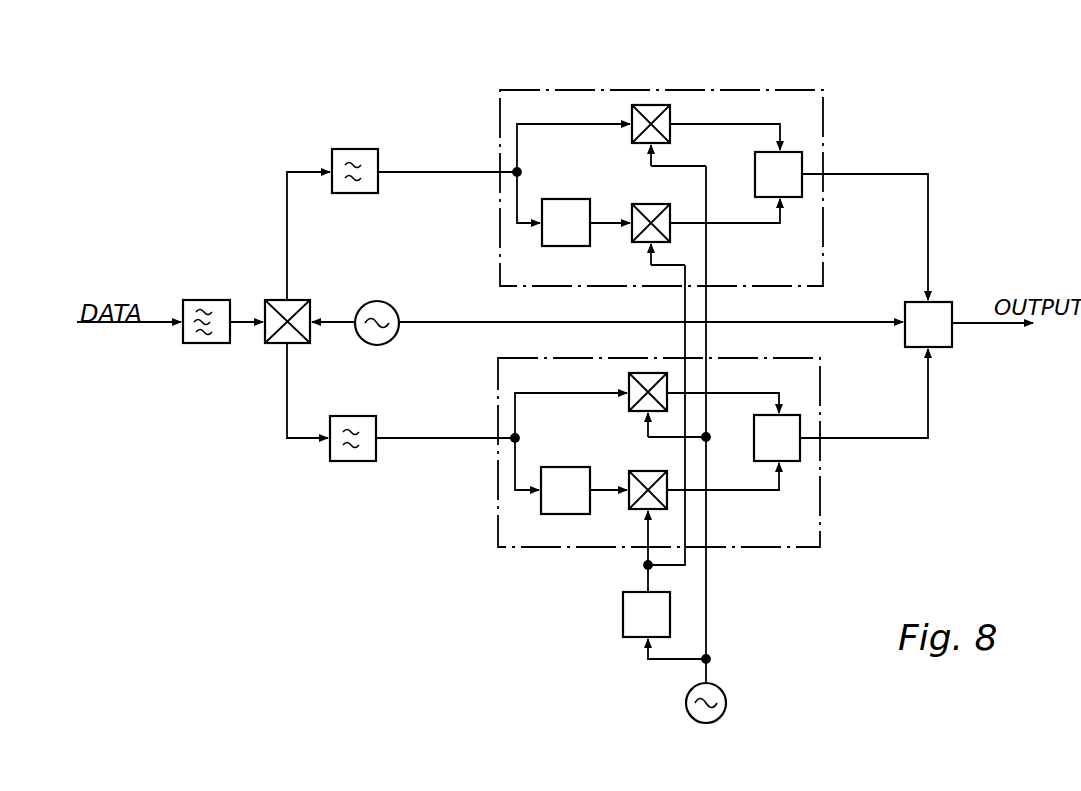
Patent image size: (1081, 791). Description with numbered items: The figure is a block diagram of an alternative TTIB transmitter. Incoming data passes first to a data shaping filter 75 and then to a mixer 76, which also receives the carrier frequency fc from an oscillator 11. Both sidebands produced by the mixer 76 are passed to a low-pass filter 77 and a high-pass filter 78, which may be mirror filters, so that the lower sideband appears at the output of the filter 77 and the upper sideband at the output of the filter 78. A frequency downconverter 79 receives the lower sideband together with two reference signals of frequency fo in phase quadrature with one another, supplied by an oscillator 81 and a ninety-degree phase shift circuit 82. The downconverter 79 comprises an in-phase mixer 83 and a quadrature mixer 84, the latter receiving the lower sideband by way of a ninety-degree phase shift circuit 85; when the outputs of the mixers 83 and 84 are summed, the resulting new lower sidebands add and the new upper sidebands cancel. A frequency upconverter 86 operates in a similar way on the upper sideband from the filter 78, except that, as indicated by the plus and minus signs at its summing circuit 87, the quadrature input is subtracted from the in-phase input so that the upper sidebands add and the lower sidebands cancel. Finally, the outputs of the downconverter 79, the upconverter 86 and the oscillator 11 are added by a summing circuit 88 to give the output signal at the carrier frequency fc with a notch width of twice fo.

The oscillator 11 is at (391, 306).
The data shaping filter 75 is at (204, 300).
The mixer 76 is at (272, 348).
The low-pass filter 77 is at (358, 149).
The high-pass filter 78 is at (356, 416).
The frequency downconverter 79 is at (694, 188).
The oscillator 81 is at (686, 703).
The 90° phase shift circuit 82 is at (623, 611).
The in phase mixer 83 is at (632, 112).
The quadrature mixer 84 is at (640, 204).
The 90° phase shift circuit 85 is at (577, 193).
The frequency upconverter 86 is at (688, 461).
The summing circuit 87 is at (755, 424).
The summing circuit 88 is at (952, 335).